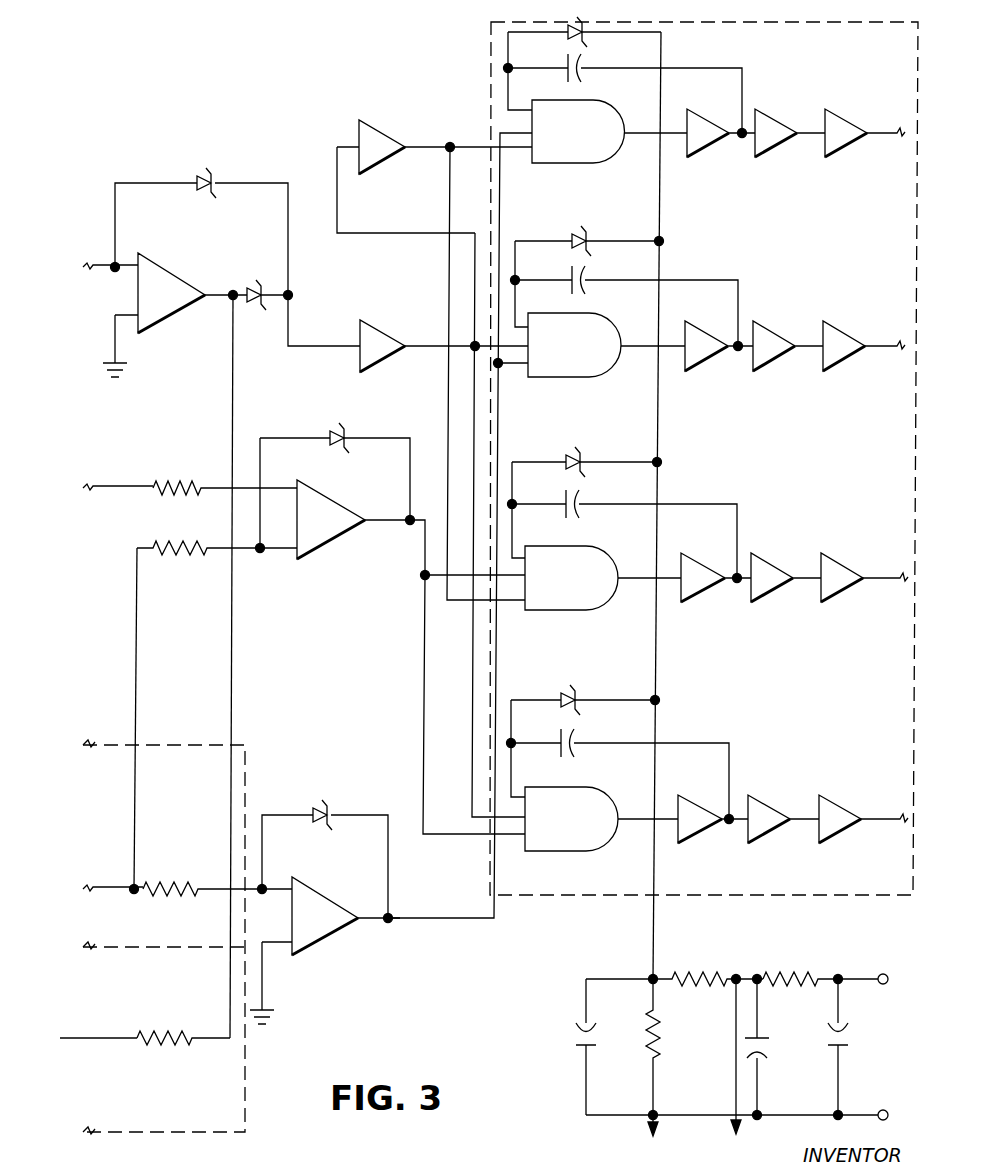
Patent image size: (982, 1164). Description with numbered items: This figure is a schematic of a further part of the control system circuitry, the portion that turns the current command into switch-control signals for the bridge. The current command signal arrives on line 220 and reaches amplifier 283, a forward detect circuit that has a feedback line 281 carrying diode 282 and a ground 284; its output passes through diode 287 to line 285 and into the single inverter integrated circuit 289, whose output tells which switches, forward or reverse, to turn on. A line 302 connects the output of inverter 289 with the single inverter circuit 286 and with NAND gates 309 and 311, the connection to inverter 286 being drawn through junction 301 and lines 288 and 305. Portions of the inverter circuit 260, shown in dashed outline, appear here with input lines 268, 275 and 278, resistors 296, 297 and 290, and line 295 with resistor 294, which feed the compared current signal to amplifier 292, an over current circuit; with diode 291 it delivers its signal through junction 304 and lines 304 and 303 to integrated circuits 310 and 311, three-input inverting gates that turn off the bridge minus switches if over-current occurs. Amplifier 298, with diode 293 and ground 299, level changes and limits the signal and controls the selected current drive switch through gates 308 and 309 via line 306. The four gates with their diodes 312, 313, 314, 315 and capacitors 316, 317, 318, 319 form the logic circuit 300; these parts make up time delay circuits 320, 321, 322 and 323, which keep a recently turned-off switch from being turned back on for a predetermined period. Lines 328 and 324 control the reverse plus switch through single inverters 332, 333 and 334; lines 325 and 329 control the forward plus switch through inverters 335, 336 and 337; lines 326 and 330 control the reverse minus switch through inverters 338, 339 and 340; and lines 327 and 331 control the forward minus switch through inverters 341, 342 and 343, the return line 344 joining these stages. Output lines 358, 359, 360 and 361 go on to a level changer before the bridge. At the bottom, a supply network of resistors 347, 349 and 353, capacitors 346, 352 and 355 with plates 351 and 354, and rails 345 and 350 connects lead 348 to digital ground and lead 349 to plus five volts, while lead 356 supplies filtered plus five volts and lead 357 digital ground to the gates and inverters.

The line 220 is at (114, 262).
The inverter circuit 260 is at (113, 743).
The input line 268 is at (105, 884).
The input line 275 is at (71, 1036).
The input line 278 is at (129, 484).
The feedback line 281 is at (166, 182).
The diode 282 is at (214, 177).
The amplifier 283 is at (161, 274).
The ground 284 is at (126, 343).
The line 285 is at (289, 301).
The single inverter circuit 286 is at (358, 126).
The diode 287 is at (270, 310).
The line 288 is at (232, 402).
The single inverter integrated circuit 289 is at (368, 321).
The resistor 290 is at (166, 482).
The diode 291 is at (326, 434).
The amplifier 292 is at (334, 506).
The zener diode 293 is at (328, 807).
The resistor 294 is at (172, 554).
The line 295 is at (136, 693).
The resistor 296 is at (210, 886).
The resistor 297 is at (170, 1036).
The amplifier 298 is at (319, 893).
The ground connection 299 is at (264, 980).
The logic circuit 300 is at (553, 20).
The line 301 is at (472, 146).
The line 302 is at (470, 236).
The line 303 is at (419, 670).
The line 304 is at (423, 578).
The line 305 is at (447, 413).
The line 306 is at (453, 920).
The gate 308 is at (588, 163).
The gate 309 is at (582, 380).
The integrated circuit 310 is at (574, 612).
The integrated circuit 311 is at (578, 844).
The diode 312 is at (573, 29).
The diode 313 is at (588, 236).
The diode 314 is at (578, 460).
The diode 315 is at (579, 700).
The capacitor 316 is at (586, 73).
The capacitor 317 is at (585, 284).
The capacitor 318 is at (582, 506).
The capacitor 319 is at (580, 743).
The time delay circuit 320 is at (500, 47).
The time delay circuit 321 is at (560, 234).
The time delay circuit 322 is at (509, 460).
The time delay circuit 323 is at (546, 694).
The line 324 is at (673, 69).
The line 325 is at (680, 280).
The line 326 is at (684, 504).
The line 327 is at (670, 748).
The line 328 is at (670, 133).
The line 329 is at (675, 348).
The line 330 is at (665, 583).
The line 331 is at (666, 822).
The single inverter 332 is at (686, 158).
The single inverter 333 is at (752, 158).
The single inverter 334 is at (831, 158).
The single inverter 335 is at (702, 373).
The single inverter 336 is at (754, 376).
The single inverter 337 is at (824, 376).
The single inverter circuit 338 is at (693, 602).
The single inverter circuit 339 is at (758, 602).
The single inverter circuit 340 is at (826, 602).
The single inverter circuit 341 is at (683, 845).
The single inverter circuit 342 is at (753, 845).
The single inverter circuit 343 is at (826, 845).
The return line 344 is at (652, 907).
The line 345 is at (585, 999).
The capacitor 346 is at (581, 1048).
The resistor 347 is at (658, 1013).
The lead 348 is at (644, 1131).
The lead 349 is at (686, 973).
The common line 350 is at (606, 1118).
The capacitor plate 351 is at (761, 1014).
The capacitor 352 is at (760, 1054).
The resistor 353 is at (770, 973).
The capacitor plate 354 is at (848, 1013).
The capacitor 355 is at (848, 1047).
The lead 356 is at (880, 974).
The lead 357 is at (881, 1110).
The line 358 is at (882, 104).
The line 359 is at (860, 346).
The line 360 is at (864, 574).
The line 361 is at (855, 819).